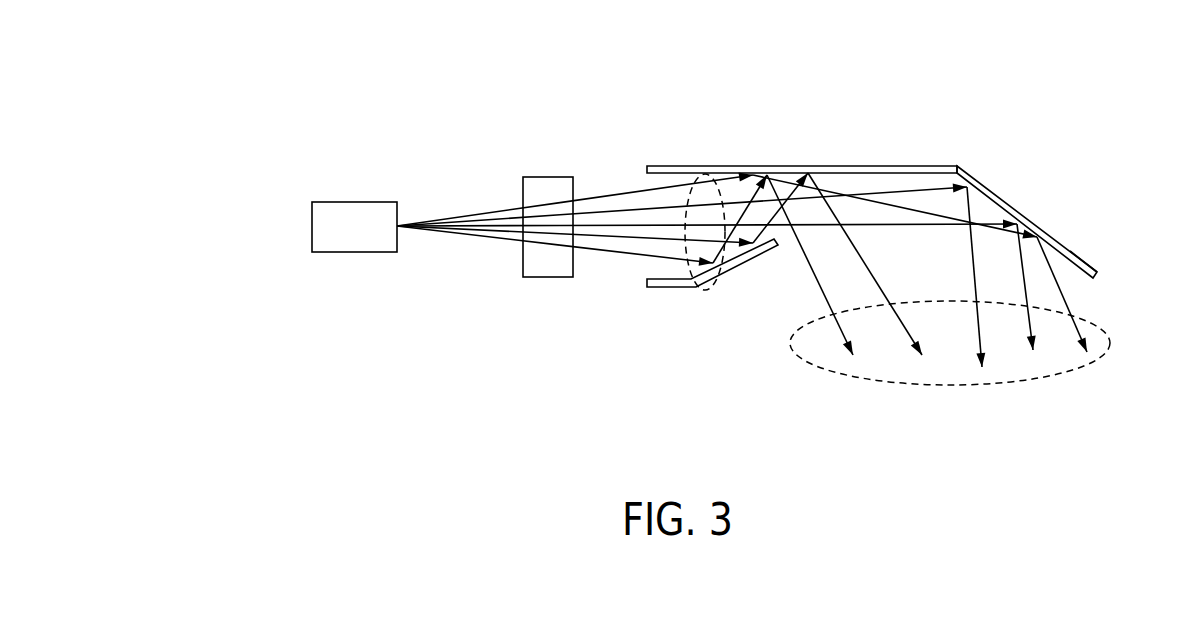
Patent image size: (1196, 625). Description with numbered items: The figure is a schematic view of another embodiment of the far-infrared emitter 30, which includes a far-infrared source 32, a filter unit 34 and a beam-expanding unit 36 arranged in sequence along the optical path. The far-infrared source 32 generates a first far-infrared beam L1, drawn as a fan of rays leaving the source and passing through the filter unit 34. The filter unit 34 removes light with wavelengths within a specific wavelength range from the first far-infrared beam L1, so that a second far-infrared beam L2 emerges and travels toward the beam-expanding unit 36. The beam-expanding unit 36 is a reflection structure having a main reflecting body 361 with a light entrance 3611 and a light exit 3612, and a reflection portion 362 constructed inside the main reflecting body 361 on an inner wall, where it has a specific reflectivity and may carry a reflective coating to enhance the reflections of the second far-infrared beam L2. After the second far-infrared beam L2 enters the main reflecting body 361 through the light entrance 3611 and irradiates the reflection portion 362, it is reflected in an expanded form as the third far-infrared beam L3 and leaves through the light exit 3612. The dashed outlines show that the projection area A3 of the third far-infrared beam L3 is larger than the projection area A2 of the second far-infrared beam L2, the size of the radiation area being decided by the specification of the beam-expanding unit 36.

The far-infrared emitter 30 is at (232, 70).
The far-infrared source 32 is at (333, 202).
The filter unit 34 is at (550, 177).
The beam-expanding unit 36 is at (884, 200).
The main reflecting body 361 is at (993, 190).
The reflection portion 362 is at (1078, 271).
The light entrance 3611 is at (650, 178).
The light exit 3612 is at (902, 251).
The first far-infrared beam L1 is at (466, 230).
The second far-infrared beam L2 is at (633, 230).
The third far-infrared beam L3 is at (1077, 303).
The projection area of the second far-infrared beam A2 is at (682, 290).
The projection area of the third far-infrared beam A3 is at (825, 352).